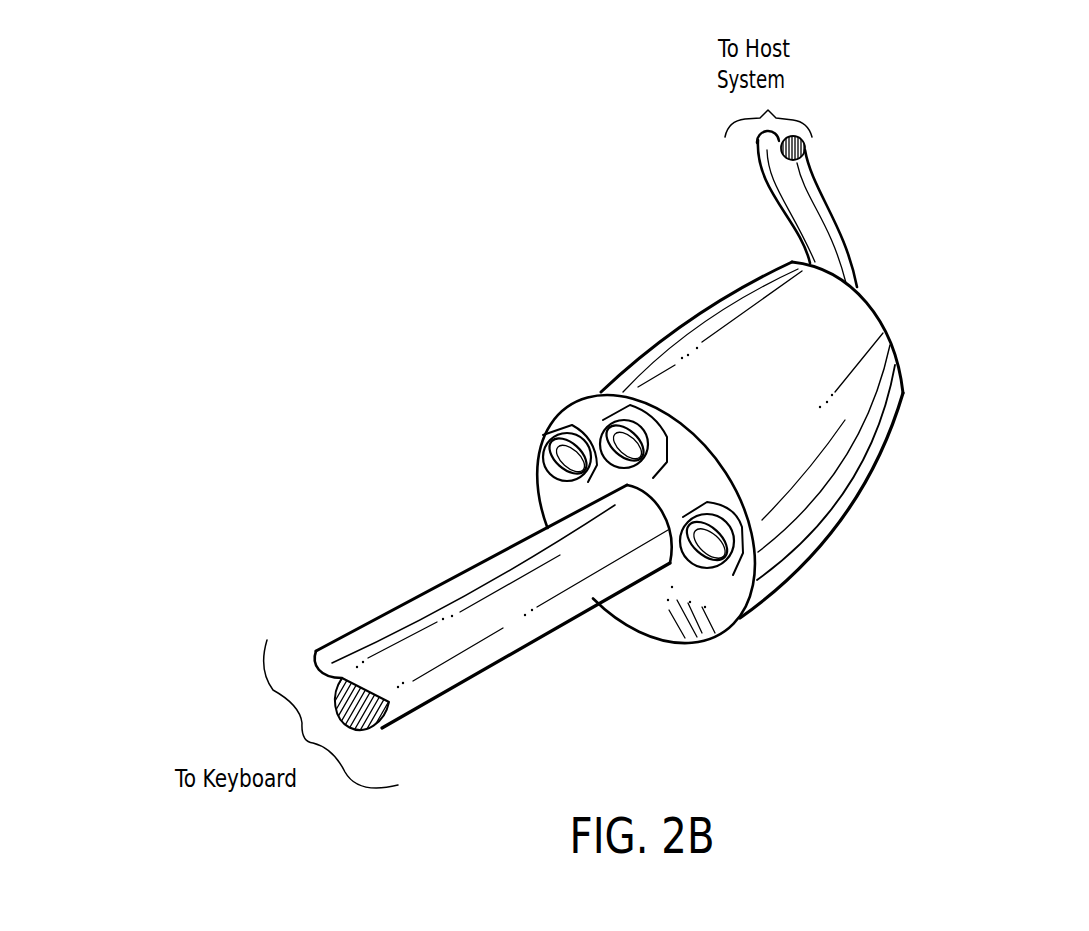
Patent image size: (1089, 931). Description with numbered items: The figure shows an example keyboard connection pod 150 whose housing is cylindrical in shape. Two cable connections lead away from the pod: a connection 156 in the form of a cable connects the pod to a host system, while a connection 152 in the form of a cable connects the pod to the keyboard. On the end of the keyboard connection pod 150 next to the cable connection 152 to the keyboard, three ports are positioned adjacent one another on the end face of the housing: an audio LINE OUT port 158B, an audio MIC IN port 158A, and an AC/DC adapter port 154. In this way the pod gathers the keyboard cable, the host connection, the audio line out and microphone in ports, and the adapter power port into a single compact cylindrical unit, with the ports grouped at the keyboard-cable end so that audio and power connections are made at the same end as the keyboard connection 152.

The keyboard connection pod 150 is at (975, 310).
The connection to the keyboard 152 is at (447, 687).
The AC/DC adapter port 154 is at (583, 370).
The connection to the host system 156 is at (820, 187).
The audio MIC IN port 158A is at (771, 602).
The audio LINE OUT port 158B is at (492, 429).